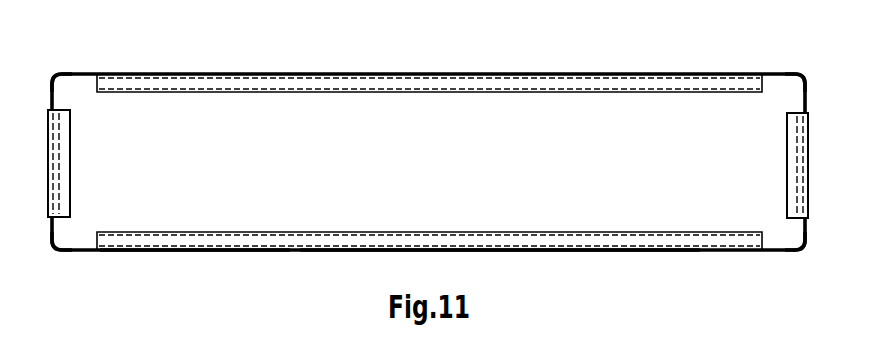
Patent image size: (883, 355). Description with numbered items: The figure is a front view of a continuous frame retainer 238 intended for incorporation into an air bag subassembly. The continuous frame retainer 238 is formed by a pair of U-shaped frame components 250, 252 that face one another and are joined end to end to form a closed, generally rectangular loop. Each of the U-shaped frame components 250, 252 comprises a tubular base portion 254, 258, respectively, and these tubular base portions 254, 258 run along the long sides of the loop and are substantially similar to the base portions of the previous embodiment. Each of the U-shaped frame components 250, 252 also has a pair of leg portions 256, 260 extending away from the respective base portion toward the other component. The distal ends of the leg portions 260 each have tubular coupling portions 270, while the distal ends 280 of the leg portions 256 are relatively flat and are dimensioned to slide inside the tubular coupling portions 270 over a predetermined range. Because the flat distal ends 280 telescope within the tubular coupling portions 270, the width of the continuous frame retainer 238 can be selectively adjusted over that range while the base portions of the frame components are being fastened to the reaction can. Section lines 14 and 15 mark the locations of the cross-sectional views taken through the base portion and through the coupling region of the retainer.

The section line 14- 14 is at (195, 62).
The section line 15- 15 is at (45, 163).
The continuous frame retainer 238 is at (607, 274).
The U-shaped frame component 250 is at (561, 67).
The U-shaped frame component 252 is at (195, 291).
The tubular base portion 254 is at (392, 74).
The leg portions 256 is at (53, 95).
The tubular base portion 258 is at (534, 256).
The leg portions 260 is at (52, 240).
The tubular coupling portions 270 is at (73, 145).
The distal ends 280 is at (55, 135).